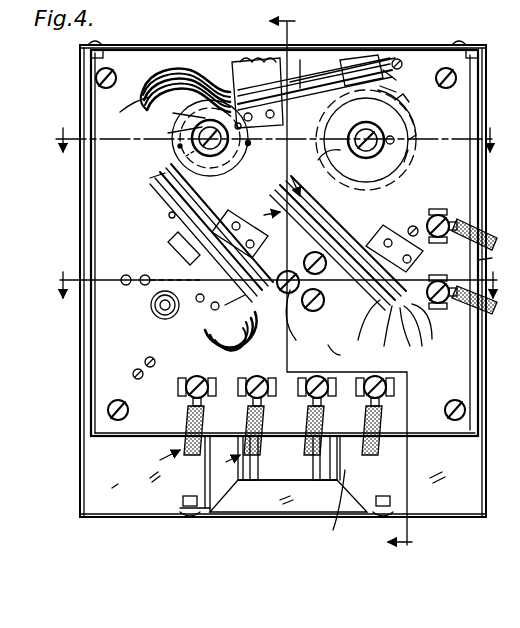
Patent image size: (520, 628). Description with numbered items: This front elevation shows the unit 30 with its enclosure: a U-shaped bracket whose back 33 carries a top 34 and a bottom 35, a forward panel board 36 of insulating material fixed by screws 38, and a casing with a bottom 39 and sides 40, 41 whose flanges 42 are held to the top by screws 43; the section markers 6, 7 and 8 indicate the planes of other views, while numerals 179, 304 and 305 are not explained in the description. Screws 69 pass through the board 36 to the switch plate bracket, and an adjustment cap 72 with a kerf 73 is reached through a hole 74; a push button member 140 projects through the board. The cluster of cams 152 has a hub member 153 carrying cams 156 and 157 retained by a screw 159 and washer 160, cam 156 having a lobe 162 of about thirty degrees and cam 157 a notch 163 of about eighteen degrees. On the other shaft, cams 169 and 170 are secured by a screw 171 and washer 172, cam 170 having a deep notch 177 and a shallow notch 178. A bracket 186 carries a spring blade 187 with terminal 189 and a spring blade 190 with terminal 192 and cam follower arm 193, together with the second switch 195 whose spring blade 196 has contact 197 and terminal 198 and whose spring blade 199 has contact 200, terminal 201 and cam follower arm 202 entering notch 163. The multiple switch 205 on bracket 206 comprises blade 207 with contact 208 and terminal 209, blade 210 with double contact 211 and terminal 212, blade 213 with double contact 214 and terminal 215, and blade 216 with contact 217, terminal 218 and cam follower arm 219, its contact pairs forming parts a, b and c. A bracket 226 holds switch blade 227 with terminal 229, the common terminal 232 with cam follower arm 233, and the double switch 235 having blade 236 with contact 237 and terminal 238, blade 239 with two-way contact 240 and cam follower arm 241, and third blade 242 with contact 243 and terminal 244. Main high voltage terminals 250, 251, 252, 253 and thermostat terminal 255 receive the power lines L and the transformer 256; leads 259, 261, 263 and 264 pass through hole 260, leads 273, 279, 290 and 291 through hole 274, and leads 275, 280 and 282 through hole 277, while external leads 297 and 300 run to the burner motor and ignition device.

The switch assembly 30 is at (146, 556).
The back 33 is at (138, 505).
The top 34 is at (122, 45).
The bottom 35 is at (186, 520).
The forward panel board 36 is at (430, 55).
The screws 38 is at (98, 80).
The casing bottom 39 is at (127, 440).
The casing side 40 is at (82, 206).
The casing side 41 is at (476, 172).
The flanges 42 is at (95, 60).
The screws 43 is at (96, 44).
The section line 6- 6 is at (341, 283).
The section line 7- 7 is at (267, 140).
The section line 8- 8 is at (278, 296).
The screws 69 is at (307, 312).
The adjustment cap 72 is at (322, 310).
The kerf 73 is at (283, 315).
The hole 74 is at (307, 352).
The push button member 140 is at (150, 306).
The cluster of cams 152 is at (172, 140).
The hub member 153 is at (178, 64).
The cam 156 is at (190, 158).
The cam 157 is at (180, 148).
The screw 159 is at (254, 126).
The washer 160 is at (260, 150).
The lobe 162 is at (192, 122).
The notch 163 is at (198, 140).
The cam 169 is at (200, 66).
The cam 170 is at (511, 198).
The screw 171 is at (355, 52).
The washer 172 is at (410, 128).
The deep notch 177 is at (416, 6).
The shallow notch 178 is at (404, 95).
The pawl 179 is at (412, 154).
The bracket 186 is at (266, 212).
The spring blade 187 is at (178, 246).
The terminal 189 is at (165, 310).
The spring blade 190 is at (240, 214).
The terminal 192 is at (160, 274).
The cam follower arm 193 is at (150, 178).
The second switch 195 is at (156, 207).
The spring blade 196 is at (168, 222).
The contact 197 is at (160, 192).
The terminal 198 is at (200, 312).
The spring blade 199 is at (236, 206).
The contact 200 is at (230, 186).
The terminal 201 is at (252, 278).
The cam follower arm 202 is at (247, 177).
The multiple switch 205 is at (362, 256).
The bracket 206 is at (398, 240).
The blade 207 is at (306, 234).
The contact 208 is at (292, 214).
The terminal 209 is at (335, 357).
The blade 210 is at (306, 262).
The double contact 211 is at (280, 200).
The terminal 212 is at (375, 323).
The blade 213 is at (362, 208).
The double contact 214 is at (293, 180).
The terminal 215 is at (396, 330).
The blade 216 is at (376, 178).
The contact 217 is at (356, 174).
The terminal 218 is at (428, 280).
The cam follower arm 219 is at (333, 154).
The bracket 226 is at (360, 130).
The switch blade 227 is at (330, 66).
The terminal 229 is at (214, 68).
The terminal 232 is at (238, 62).
The cam follower arm 233 is at (382, 88).
The double switch 235 is at (285, 70).
The blade 236 is at (345, 58).
The contact 237 is at (352, 62).
The terminal 238 is at (224, 72).
The blade 239 is at (312, 70).
The two-way contact 240 is at (356, 75).
The cam follower arm 241 is at (382, 74).
The third blade 242 is at (318, 98).
The contact 243 is at (358, 110).
The terminal 244 is at (175, 113).
The main high voltage terminal 250 is at (190, 407).
The main high voltage terminal 251 is at (250, 406).
The main high voltage terminal 252 is at (322, 52).
The main high voltage terminal 253 is at (392, 396).
The thermostat terminal 255 is at (452, 220).
The transformer 256 is at (333, 512).
The lead 259 is at (420, 314).
The hole 260 is at (433, 332).
The lead 261 is at (420, 339).
The lead 263 is at (395, 359).
The lead 264 is at (445, 316).
The line 273 is at (230, 344).
The hole 274 is at (208, 335).
The branch 275 is at (160, 78).
The hole 277 is at (123, 108).
The lead 279 is at (258, 325).
The second branch 280 is at (203, 70).
The lead 282 is at (190, 68).
The lead 290 is at (250, 340).
The lead 291 is at (166, 134).
The lead 297 is at (312, 455).
The lead 300 is at (353, 458).
The terminal 304 is at (508, 338).
The terminal 305 is at (498, 267).
The part a of switch a is at (342, 78).
The part b of switch b is at (272, 156).
The part c of switch c is at (268, 215).
The power lines L is at (194, 461).